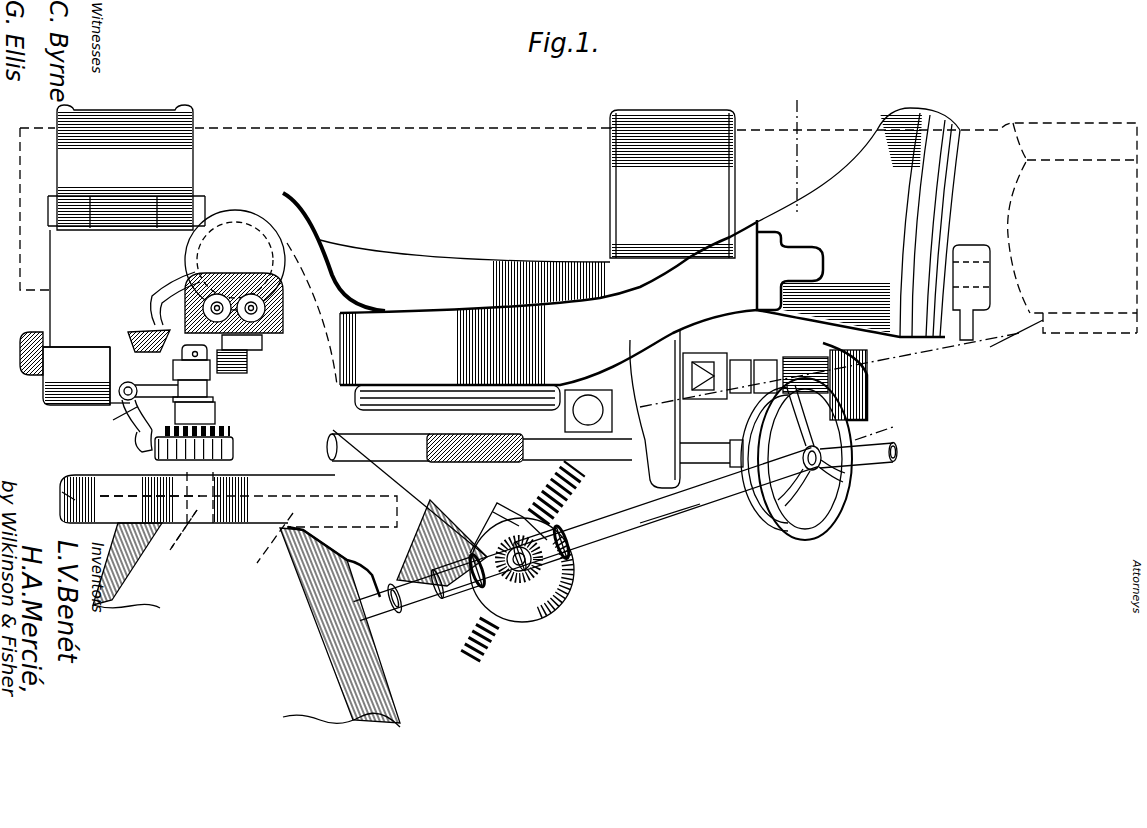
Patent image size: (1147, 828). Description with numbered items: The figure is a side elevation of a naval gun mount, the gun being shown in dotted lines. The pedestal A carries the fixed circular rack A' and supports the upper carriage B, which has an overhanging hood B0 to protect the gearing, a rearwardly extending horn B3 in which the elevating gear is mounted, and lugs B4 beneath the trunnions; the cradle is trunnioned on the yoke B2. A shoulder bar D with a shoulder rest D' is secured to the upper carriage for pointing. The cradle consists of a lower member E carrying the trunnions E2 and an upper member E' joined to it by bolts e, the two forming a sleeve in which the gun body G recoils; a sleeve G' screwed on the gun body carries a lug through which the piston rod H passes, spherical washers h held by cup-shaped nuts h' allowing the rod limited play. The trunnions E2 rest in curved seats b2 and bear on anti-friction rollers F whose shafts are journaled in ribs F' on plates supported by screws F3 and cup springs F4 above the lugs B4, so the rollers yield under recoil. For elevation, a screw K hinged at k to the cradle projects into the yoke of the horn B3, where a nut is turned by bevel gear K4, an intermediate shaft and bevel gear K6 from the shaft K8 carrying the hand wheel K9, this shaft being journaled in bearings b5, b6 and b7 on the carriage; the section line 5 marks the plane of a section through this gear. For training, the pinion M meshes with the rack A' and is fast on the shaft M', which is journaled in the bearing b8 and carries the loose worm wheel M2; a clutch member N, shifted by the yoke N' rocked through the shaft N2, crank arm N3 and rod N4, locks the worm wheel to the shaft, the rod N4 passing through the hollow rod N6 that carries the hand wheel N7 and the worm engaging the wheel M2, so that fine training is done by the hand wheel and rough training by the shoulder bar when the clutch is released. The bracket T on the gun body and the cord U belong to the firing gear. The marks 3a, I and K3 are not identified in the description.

The upper member of the cradle E' is at (126, 155).
The bolts e is at (52, 210).
The bracket 3a is at (165, 376).
The cup springs F4 is at (149, 341).
The sleeve G' is at (672, 184).
The gun body G is at (538, 155).
The shoulder rest D' is at (858, 222).
The lower member of the cradle E is at (465, 265).
The yoke B2 is at (305, 250).
The shoulder bar D is at (548, 303).
The cylinder I is at (407, 403).
The trunnions E2 is at (237, 267).
The anti-friction rollers F is at (200, 303).
The ribs F' is at (261, 315).
The curved seats b2 is at (192, 283).
The screws F3 is at (262, 350).
The lugs B4 is at (234, 373).
The clutch member N is at (219, 391).
The worm wheel M2 is at (163, 448).
The shaft N2 is at (118, 386).
The yoke N' is at (132, 386).
The crank arm N3 is at (140, 437).
The bearing b8 is at (133, 408).
The pinion M is at (220, 536).
The shaft M' is at (199, 483).
The overhanging hood B0 is at (62, 492).
The pedestal A is at (246, 625).
The fixed circular rack A' is at (213, 549).
The upper carriage B is at (525, 433).
The rod N4 is at (457, 437).
The hollow rod N6 is at (622, 462).
The hinge k is at (596, 412).
The bracket T is at (690, 352).
The spherical washers h is at (744, 358).
The cup-shaped nuts h' is at (775, 359).
The piston rod H is at (867, 398).
The cord U is at (967, 350).
The horn B3 is at (432, 500).
The bevel gear K6 is at (566, 603).
The boss K3 is at (510, 503).
The elevating screw K is at (562, 500).
The bevel gear K4 is at (497, 585).
The training shaft 5 is at (415, 531).
The bearing b5 is at (385, 618).
The bearing b6 is at (460, 600).
The bearing b7 is at (580, 562).
The shaft K8 is at (670, 523).
The hand wheel K9 is at (800, 530).
The hand wheel N7 is at (760, 522).